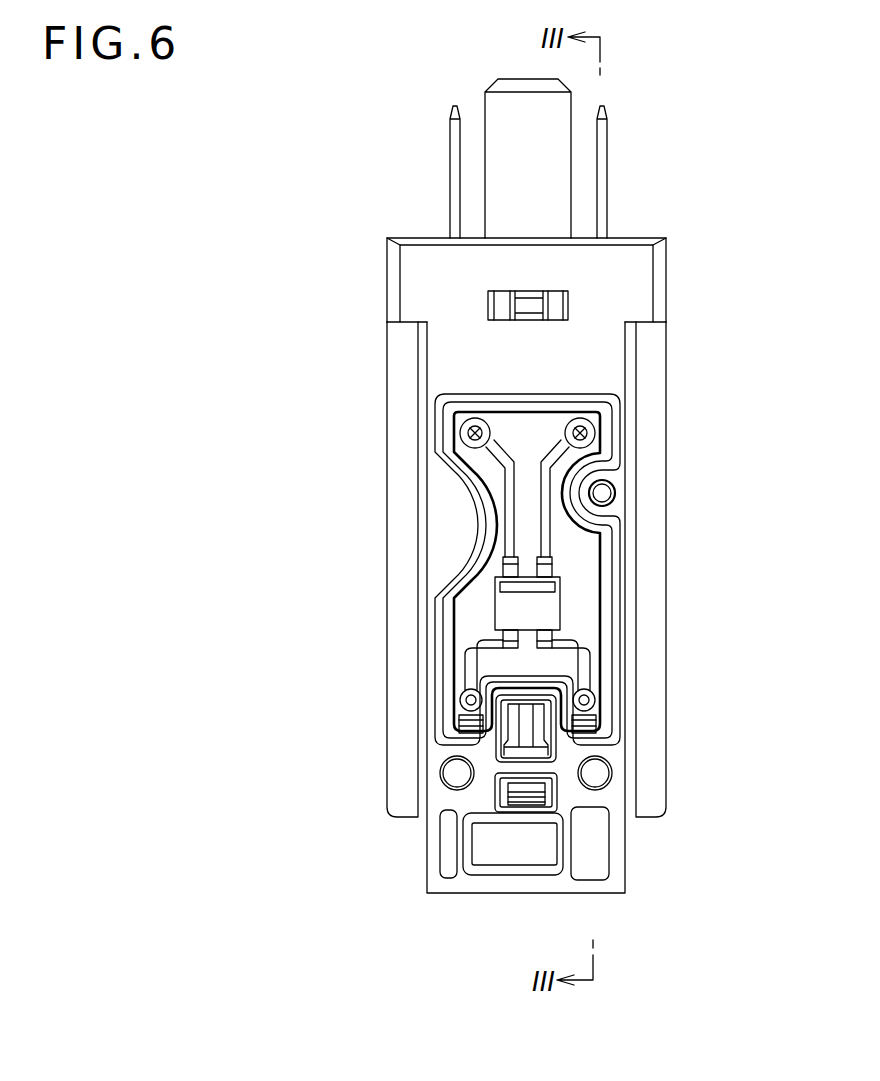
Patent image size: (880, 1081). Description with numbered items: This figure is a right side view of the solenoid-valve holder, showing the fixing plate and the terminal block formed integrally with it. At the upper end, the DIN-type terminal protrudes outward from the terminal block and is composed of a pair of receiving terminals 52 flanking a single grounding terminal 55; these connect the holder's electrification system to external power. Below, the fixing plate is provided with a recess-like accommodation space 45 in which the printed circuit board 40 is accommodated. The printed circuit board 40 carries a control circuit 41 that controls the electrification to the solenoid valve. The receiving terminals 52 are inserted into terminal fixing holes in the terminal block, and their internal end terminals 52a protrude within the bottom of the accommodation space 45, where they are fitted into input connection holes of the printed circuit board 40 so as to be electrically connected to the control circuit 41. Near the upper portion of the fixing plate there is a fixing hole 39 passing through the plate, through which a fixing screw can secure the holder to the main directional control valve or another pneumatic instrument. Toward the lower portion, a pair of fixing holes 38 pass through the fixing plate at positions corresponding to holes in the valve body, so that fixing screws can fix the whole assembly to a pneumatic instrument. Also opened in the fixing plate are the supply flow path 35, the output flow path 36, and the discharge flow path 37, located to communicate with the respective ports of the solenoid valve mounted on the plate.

The supply flow path 35 is at (498, 855).
The output flow path 36 is at (528, 803).
The discharge flow path 37 is at (543, 752).
The fixing holes 38 is at (452, 773).
The fixing hole 39 is at (605, 492).
The printed circuit board 40 is at (583, 610).
The control circuit 41 is at (493, 608).
The accommodation space 45 is at (548, 420).
The receiving terminals 52 is at (450, 148).
The internal end terminals 52a is at (468, 433).
The grounding terminal 55 is at (503, 122).